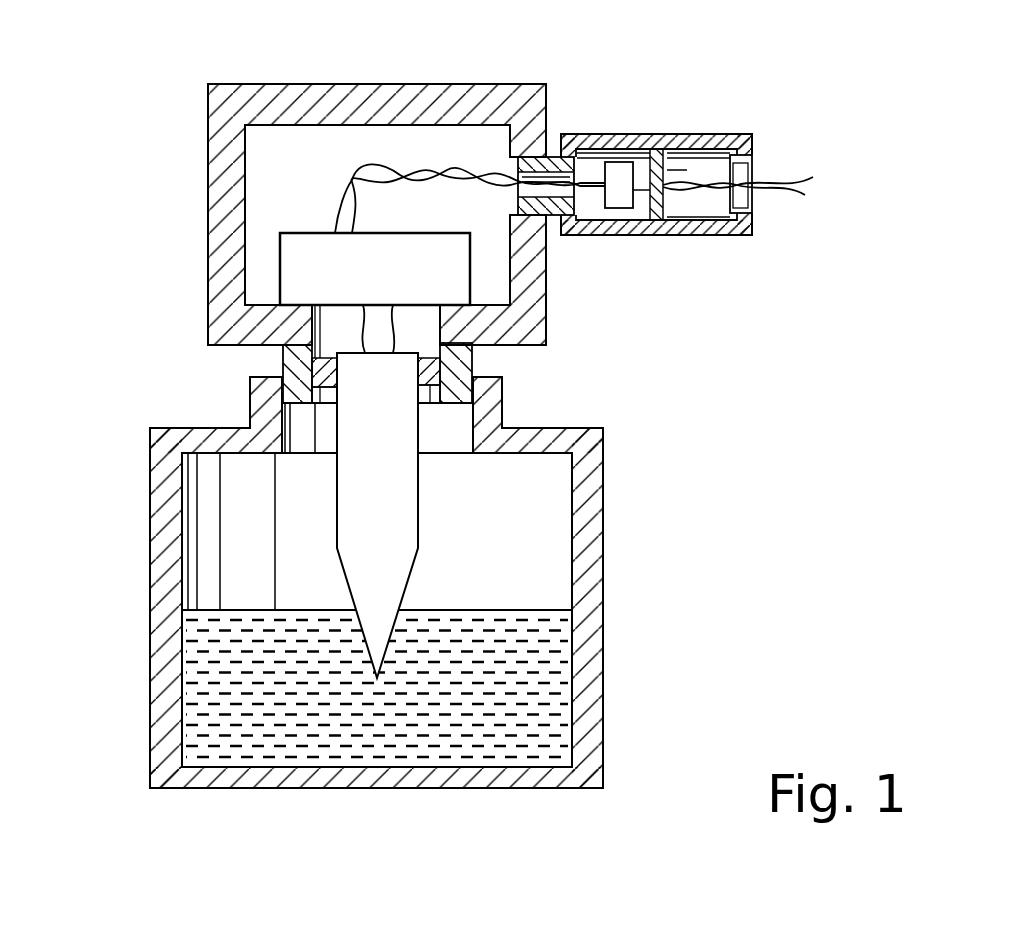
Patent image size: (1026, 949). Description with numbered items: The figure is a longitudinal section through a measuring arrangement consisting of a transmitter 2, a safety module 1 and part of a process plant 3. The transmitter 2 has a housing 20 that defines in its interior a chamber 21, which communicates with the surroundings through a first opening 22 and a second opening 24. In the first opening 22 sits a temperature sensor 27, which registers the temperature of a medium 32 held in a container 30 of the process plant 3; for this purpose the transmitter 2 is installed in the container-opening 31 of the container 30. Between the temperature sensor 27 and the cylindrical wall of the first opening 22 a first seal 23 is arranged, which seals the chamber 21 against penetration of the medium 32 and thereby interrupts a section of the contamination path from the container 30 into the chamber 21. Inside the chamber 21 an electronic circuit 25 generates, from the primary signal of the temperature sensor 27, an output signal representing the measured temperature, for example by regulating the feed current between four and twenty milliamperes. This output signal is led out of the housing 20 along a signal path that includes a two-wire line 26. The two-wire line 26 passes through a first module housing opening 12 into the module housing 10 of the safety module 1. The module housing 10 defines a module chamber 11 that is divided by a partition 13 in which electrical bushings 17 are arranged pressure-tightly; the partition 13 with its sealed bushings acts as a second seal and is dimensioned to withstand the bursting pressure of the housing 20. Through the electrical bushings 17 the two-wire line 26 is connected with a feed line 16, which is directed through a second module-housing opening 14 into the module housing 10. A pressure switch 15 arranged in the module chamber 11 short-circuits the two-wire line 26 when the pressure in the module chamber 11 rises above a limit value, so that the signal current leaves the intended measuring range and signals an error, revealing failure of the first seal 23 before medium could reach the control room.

The safety module 1 is at (700, 128).
The transmitter 2 is at (130, 155).
The process plant 3 is at (650, 592).
The module housing 10 is at (712, 226).
The module chamber 11 is at (637, 208).
The first module housing opening 12 is at (567, 208).
The partition 13 is at (652, 152).
The second module-housing opening 14 is at (752, 198).
The pressure switch 15 is at (620, 162).
The feed line 16 is at (790, 197).
The electrical bushings 17 is at (652, 205).
The housing 20 is at (220, 243).
The chamber 21 is at (495, 282).
The first opening 22 is at (428, 397).
The first seal 23 is at (432, 362).
The second opening 24 is at (505, 168).
The electronic circuit 25 is at (393, 283).
The two-wire line 26 is at (407, 172).
The temperature sensor 27 is at (403, 485).
The container 30 is at (163, 571).
The container-opening 31 is at (303, 437).
The medium 32 is at (537, 673).